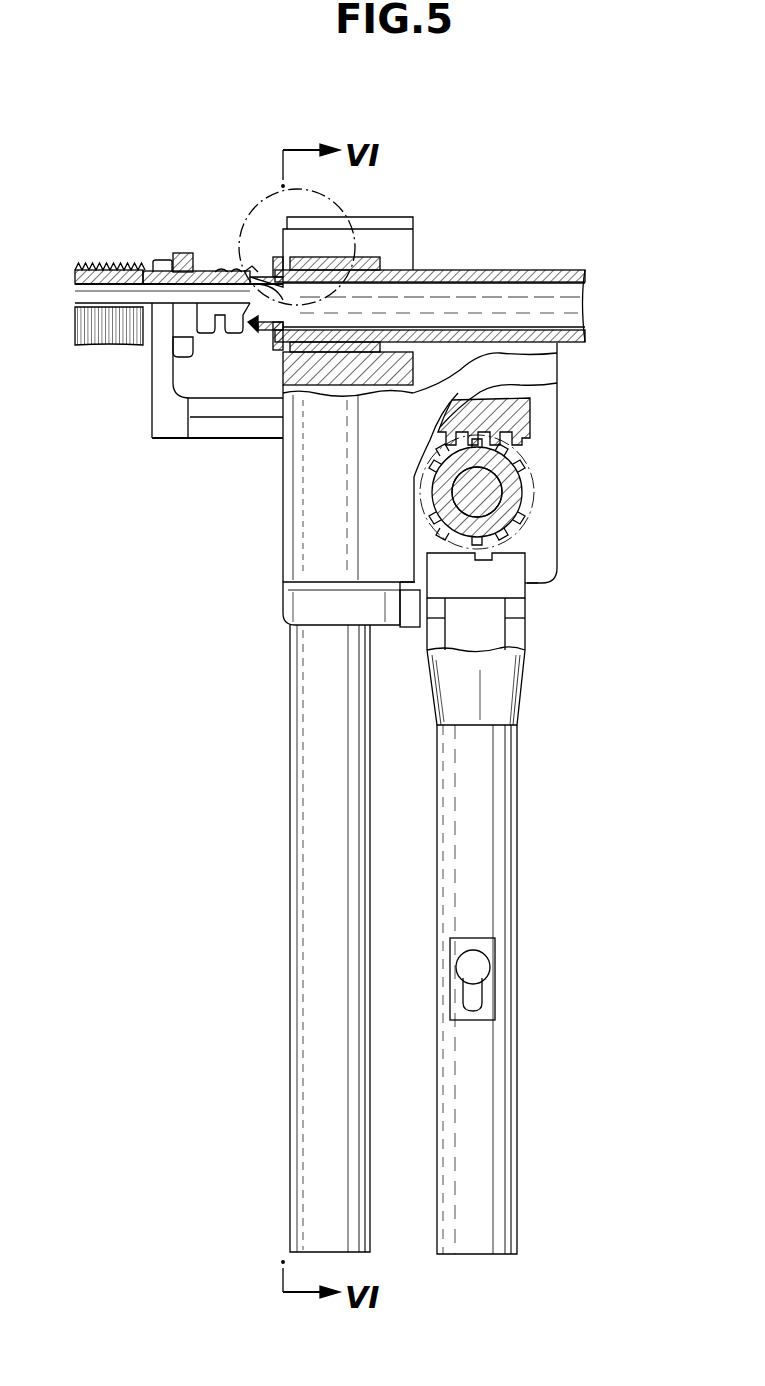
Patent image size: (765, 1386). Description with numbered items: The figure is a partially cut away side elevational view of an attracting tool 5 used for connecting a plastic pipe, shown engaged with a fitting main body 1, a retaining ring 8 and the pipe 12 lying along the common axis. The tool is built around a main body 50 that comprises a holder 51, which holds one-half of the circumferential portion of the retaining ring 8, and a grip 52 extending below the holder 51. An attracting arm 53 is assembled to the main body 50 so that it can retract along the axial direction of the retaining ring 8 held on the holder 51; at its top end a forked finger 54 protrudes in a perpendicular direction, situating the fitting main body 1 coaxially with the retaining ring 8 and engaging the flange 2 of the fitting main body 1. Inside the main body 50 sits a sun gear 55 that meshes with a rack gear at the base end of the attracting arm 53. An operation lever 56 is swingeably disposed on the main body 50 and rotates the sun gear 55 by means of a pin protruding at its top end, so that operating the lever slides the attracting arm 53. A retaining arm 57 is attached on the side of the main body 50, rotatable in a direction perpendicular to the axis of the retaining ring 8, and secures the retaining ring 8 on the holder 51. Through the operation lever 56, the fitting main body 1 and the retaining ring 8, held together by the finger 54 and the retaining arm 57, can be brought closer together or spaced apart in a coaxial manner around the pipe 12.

The fitting main body 1 is at (137, 260).
The flange 2 is at (187, 252).
The attracting tool 5 is at (152, 606).
The retaining ring 8 is at (305, 258).
The pipe 12 is at (575, 275).
The main body 50 is at (290, 605).
The holder 51 is at (357, 367).
The grip 52 is at (312, 938).
The attracting arm 53 is at (218, 430).
The forked finger 54 is at (160, 327).
The sun gear 55 is at (515, 488).
The operation lever 56 is at (483, 880).
The retaining arm 57 is at (400, 245).